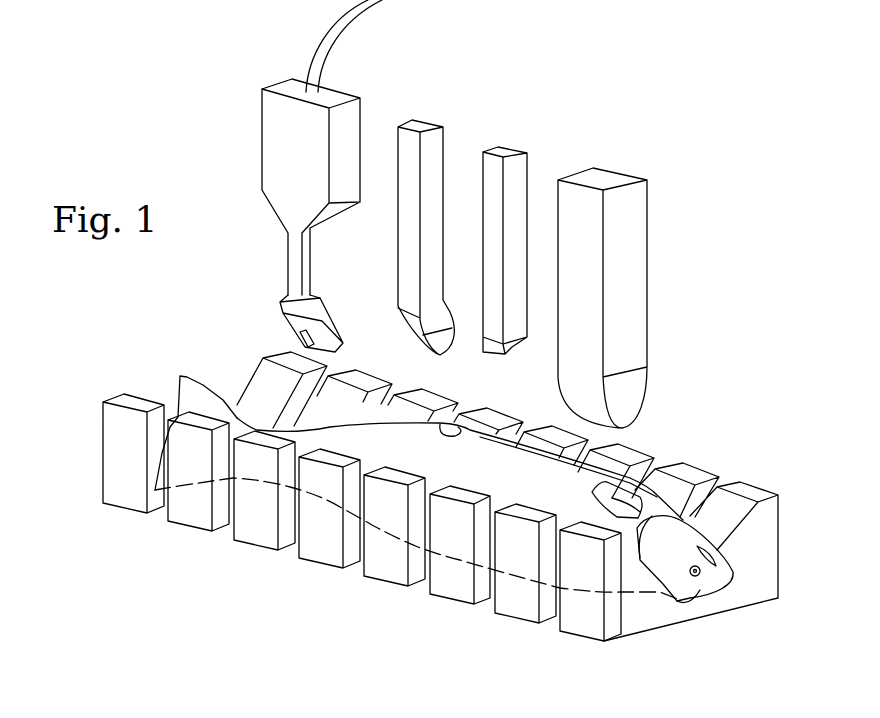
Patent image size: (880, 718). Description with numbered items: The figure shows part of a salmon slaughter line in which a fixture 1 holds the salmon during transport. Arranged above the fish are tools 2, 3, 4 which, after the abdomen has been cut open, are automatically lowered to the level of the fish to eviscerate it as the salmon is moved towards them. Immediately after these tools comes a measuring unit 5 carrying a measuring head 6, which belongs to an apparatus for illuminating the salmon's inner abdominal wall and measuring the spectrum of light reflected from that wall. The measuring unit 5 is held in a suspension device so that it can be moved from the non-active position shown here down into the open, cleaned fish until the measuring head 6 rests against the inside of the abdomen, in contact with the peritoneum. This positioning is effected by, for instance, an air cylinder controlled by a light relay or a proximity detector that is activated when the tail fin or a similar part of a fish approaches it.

The fixture 1 is at (688, 473).
The tool 2 is at (608, 176).
The tool 3 is at (503, 150).
The tool 4 is at (420, 125).
The measuring unit 5 is at (332, 97).
The measuring head 6 is at (283, 312).